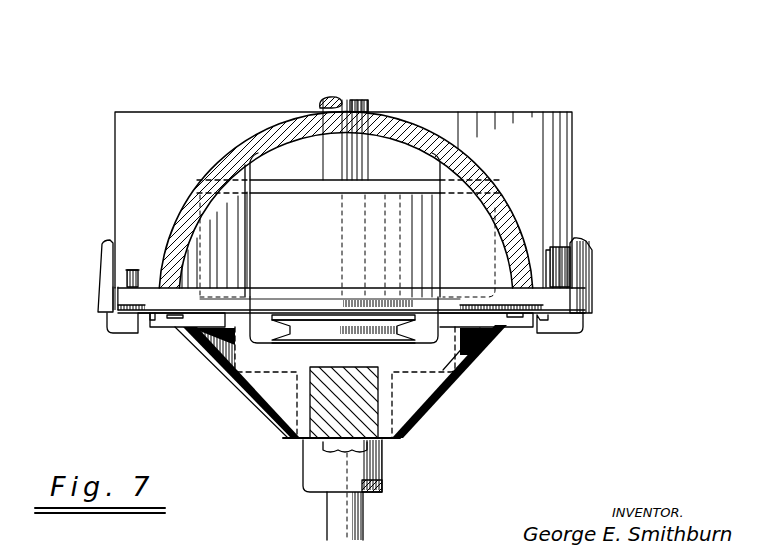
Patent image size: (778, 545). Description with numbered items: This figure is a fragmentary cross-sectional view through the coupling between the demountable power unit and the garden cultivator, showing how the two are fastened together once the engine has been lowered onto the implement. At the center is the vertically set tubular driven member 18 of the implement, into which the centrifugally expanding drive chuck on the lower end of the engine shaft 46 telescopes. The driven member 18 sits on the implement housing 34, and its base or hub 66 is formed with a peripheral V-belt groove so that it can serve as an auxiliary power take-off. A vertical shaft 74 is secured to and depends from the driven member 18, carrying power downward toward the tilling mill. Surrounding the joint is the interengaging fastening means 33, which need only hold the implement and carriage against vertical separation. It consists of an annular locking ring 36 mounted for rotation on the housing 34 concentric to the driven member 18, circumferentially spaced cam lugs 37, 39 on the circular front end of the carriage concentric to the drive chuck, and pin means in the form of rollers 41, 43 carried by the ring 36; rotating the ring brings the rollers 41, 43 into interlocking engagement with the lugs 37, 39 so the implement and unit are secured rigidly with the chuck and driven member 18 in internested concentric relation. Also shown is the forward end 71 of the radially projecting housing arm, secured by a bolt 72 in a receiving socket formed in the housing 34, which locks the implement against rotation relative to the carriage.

The tubular driven member 18 is at (298, 197).
The interengaging fastening means 33 is at (597, 322).
The implement housing 34 is at (445, 407).
The annular locking ring 36 is at (283, 310).
The cam lug 37 is at (130, 268).
The cam lug 39 is at (571, 276).
The pin means (roller) 41 is at (123, 258).
The pin means (roller) 43 is at (568, 243).
The engine shaft 46 is at (358, 100).
The base or hub of the driven member 66 is at (385, 333).
The forward end of arm 71 is at (318, 412).
The bolt 72 is at (368, 453).
The vertical shaft 74 is at (363, 521).